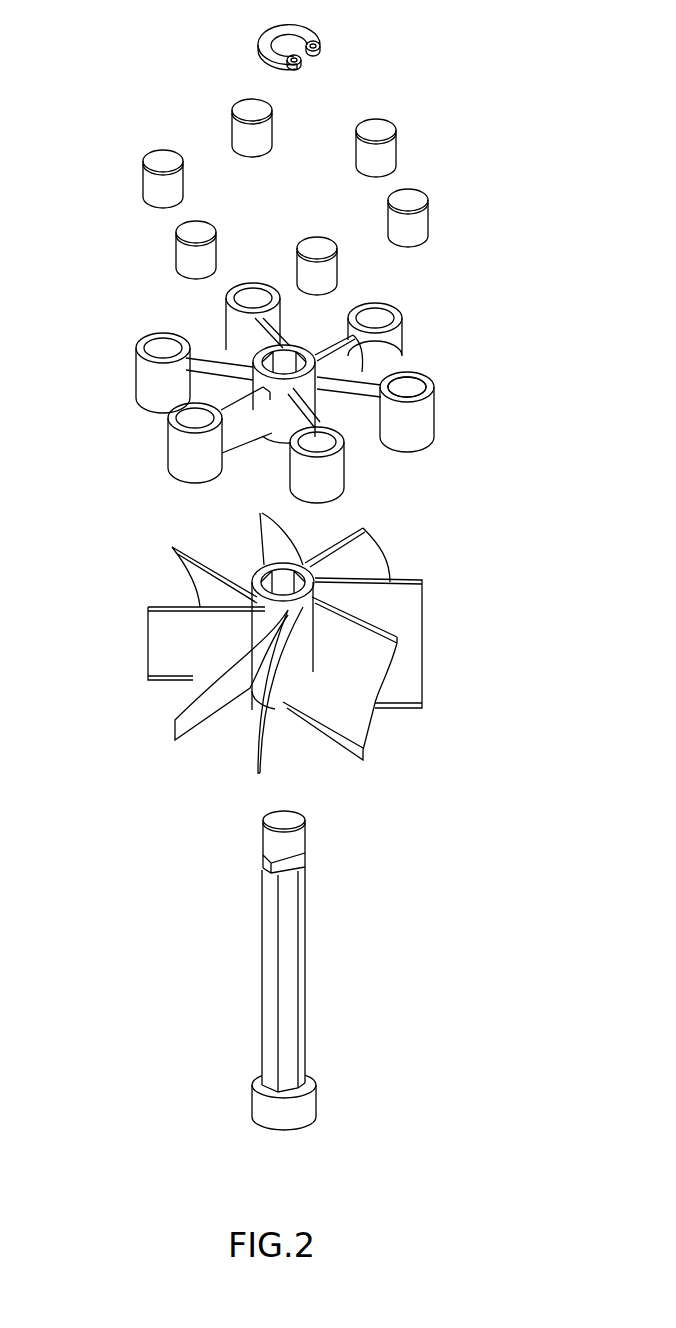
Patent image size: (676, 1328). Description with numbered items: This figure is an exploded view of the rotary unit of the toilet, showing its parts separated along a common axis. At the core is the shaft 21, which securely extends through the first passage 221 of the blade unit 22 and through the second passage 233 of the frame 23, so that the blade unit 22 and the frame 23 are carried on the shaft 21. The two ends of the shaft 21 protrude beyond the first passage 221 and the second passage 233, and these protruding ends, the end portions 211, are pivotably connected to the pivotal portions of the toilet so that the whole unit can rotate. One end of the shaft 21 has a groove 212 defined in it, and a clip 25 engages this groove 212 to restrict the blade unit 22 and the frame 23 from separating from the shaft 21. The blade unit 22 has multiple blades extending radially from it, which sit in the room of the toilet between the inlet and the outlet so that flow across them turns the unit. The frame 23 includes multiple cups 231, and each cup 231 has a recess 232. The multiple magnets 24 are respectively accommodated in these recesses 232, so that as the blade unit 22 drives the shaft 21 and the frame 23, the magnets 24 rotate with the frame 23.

The shaft 21 is at (276, 984).
The shaft end bushing 211 is at (303, 838).
The groove 212 is at (263, 866).
The blade unit 22 is at (313, 643).
The first passage 221 is at (273, 582).
The frame 23 is at (275, 393).
The cup 231 is at (422, 433).
The recess 232 is at (417, 388).
The second passage 233 is at (273, 363).
The magnet 24 is at (149, 186).
The clip 25 is at (310, 30).